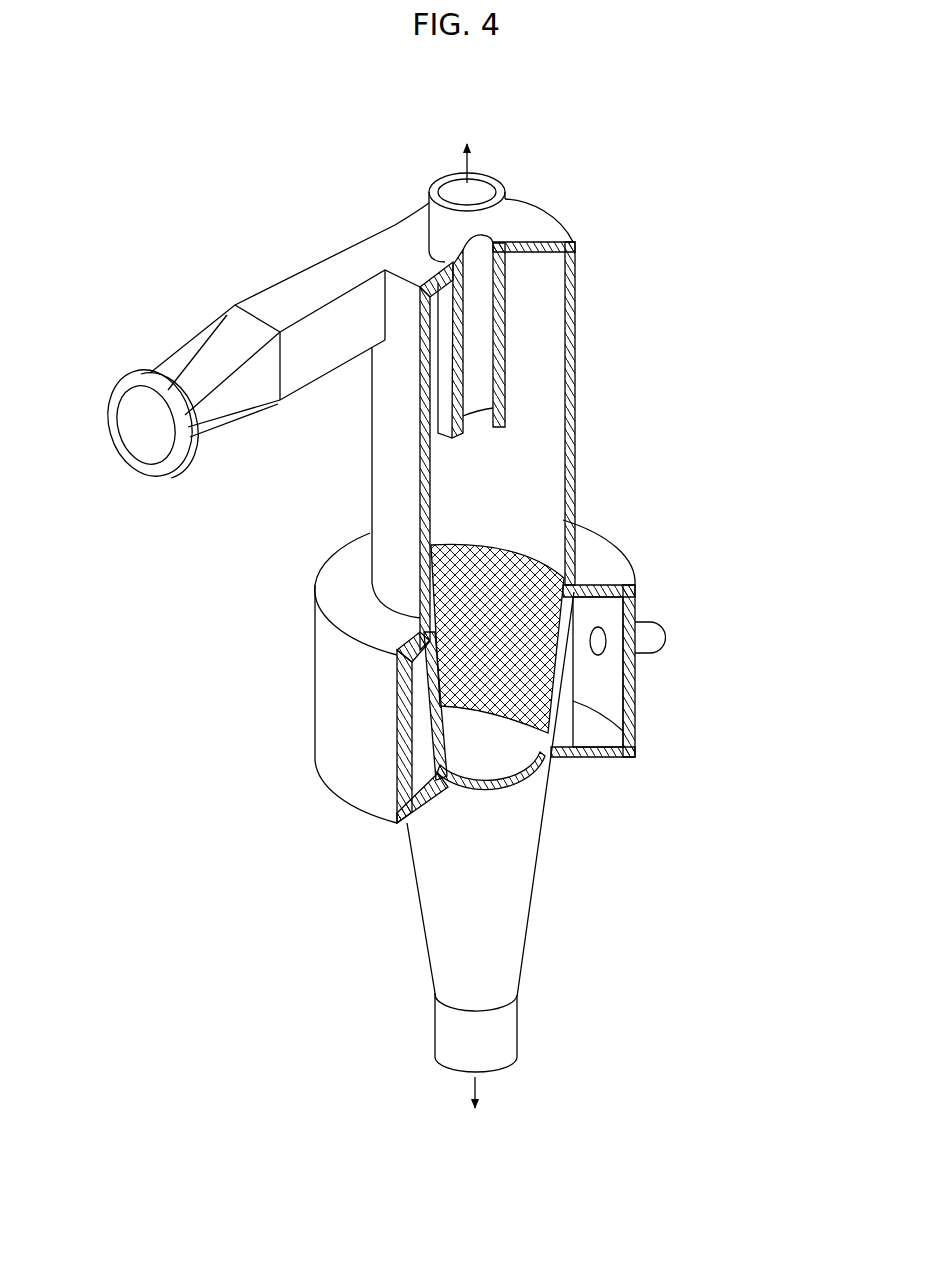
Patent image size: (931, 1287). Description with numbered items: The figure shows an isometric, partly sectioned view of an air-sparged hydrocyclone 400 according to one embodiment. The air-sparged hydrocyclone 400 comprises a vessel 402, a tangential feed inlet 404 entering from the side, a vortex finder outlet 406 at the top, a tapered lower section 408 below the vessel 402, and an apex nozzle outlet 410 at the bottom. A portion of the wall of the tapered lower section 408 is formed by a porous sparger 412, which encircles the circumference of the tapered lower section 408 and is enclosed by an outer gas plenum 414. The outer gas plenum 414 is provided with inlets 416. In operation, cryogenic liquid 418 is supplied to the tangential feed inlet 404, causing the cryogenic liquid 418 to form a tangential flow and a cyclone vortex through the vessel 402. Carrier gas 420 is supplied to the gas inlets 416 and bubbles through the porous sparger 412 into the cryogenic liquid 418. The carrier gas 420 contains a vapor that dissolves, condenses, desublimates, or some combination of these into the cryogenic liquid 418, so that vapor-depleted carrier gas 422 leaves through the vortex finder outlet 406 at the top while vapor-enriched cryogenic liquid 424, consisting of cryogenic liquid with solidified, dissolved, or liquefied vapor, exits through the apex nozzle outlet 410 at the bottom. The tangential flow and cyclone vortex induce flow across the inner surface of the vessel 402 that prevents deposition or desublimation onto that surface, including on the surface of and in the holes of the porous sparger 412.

The air-sparged hydrocyclone 400 is at (150, 118).
The vessel 402 is at (538, 444).
The tangential feed inlet 404 is at (232, 402).
The vortex finder outlet 406 is at (443, 222).
The tapered lower section 408 is at (518, 924).
The apex nozzle outlet 410 is at (442, 1030).
The porous sparger 412 is at (555, 568).
The outer gas plenum 414 is at (318, 565).
The gas inlets 416 is at (643, 621).
The cryogenic liquid 418 is at (146, 429).
The carrier gas 420 is at (680, 637).
The vapor-depleted carrier gas 422 is at (467, 144).
The vapor-enriched cryogenic liquid 424 is at (474, 1116).